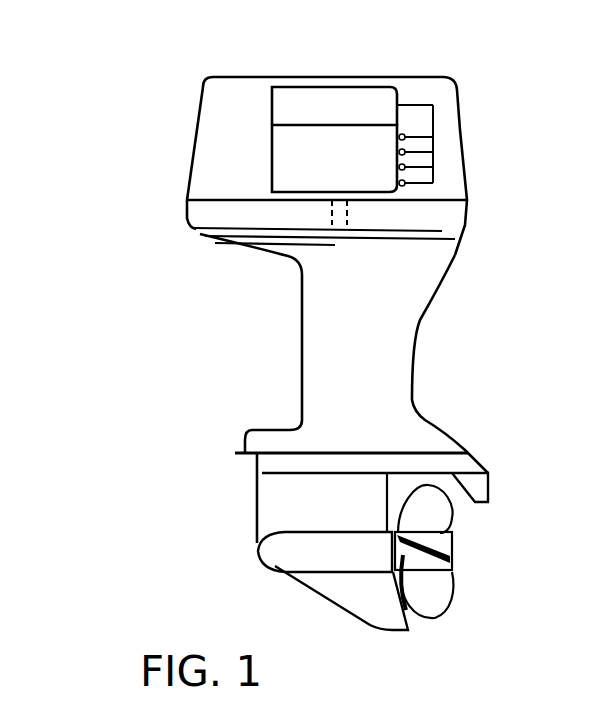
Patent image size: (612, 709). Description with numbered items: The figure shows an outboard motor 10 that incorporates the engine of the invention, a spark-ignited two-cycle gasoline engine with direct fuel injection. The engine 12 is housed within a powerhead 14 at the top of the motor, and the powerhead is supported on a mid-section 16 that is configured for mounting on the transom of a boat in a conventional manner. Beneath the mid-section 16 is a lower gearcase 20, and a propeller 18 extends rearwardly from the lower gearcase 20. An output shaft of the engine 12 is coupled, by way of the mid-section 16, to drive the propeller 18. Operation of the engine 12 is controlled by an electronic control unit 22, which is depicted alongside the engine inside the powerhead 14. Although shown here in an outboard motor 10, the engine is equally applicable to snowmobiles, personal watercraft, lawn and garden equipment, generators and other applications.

The outboard motor 10 is at (106, 103).
The engine 12 is at (272, 143).
The powerhead 14 is at (458, 104).
The mid-section 16 is at (397, 364).
The propeller 18 is at (447, 543).
The lower gearcase 20 is at (268, 549).
The electronic control unit (ECU) 22 is at (372, 101).